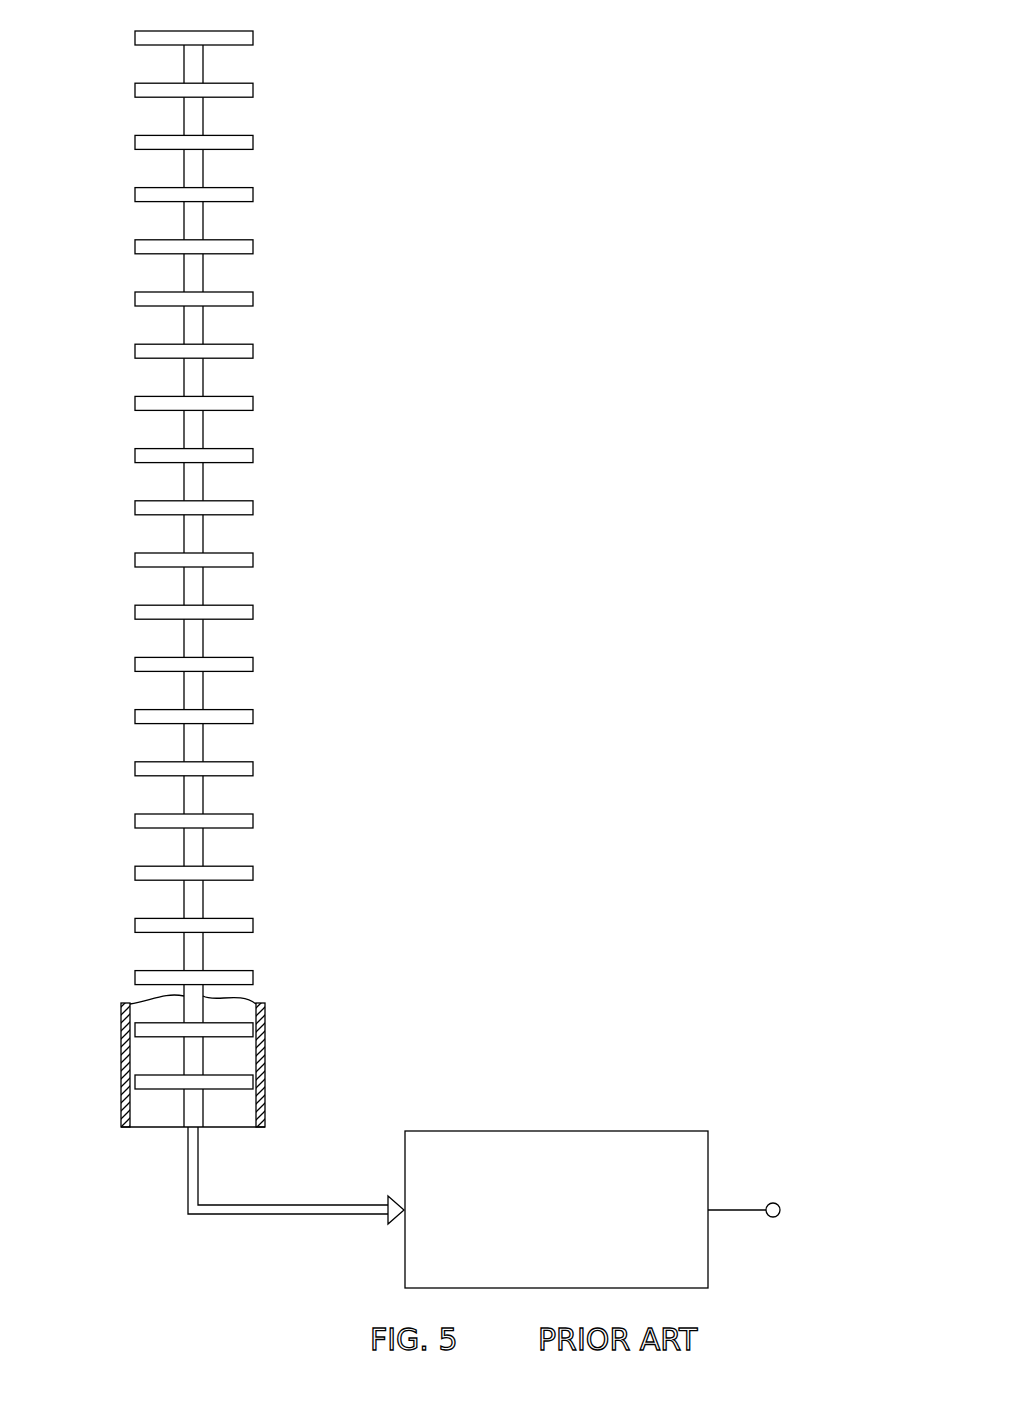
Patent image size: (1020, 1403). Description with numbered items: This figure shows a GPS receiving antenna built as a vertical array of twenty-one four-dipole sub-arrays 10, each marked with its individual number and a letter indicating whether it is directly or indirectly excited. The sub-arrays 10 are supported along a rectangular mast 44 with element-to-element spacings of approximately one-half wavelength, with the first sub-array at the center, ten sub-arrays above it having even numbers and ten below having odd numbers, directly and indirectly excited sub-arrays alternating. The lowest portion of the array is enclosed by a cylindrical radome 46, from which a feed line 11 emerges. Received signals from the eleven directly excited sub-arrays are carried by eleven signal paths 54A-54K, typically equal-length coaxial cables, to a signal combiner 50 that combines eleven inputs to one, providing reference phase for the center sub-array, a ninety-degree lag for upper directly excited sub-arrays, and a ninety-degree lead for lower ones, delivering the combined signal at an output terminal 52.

The sub-array 10 is at (253, 38).
The mast 44 is at (183, 907).
The cylindrical radome 46 is at (122, 1072).
The feed line 11 is at (177, 1153).
The signal paths 54A-54K is at (312, 1217).
The signal combiner 50 is at (613, 1131).
The output terminal 52 is at (780, 1203).